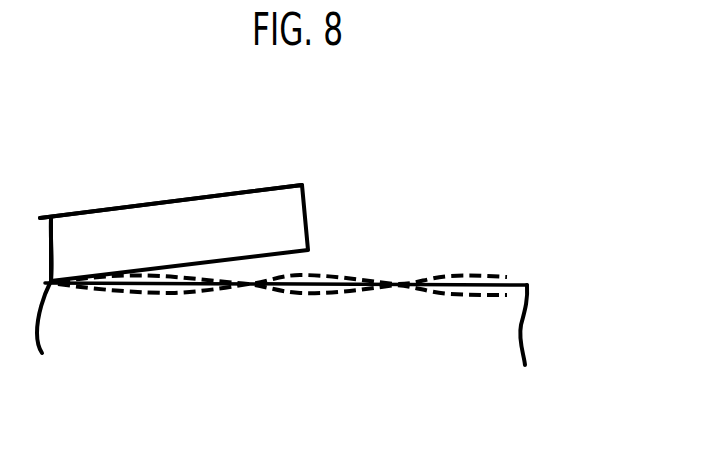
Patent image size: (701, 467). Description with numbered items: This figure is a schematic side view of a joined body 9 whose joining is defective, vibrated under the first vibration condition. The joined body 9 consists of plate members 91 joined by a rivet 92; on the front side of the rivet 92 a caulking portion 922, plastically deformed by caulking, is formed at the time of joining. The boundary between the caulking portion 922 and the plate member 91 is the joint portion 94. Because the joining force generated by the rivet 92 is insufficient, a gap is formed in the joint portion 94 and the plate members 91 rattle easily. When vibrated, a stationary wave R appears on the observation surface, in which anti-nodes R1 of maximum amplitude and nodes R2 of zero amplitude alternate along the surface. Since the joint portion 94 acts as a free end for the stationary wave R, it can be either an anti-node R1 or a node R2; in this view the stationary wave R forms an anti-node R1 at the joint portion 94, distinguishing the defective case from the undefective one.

The joined body 9 is at (463, 171).
The plate member 91 is at (510, 338).
The rivet 92 is at (200, 188).
The caulking portion 922 is at (120, 230).
The joint portion 94 is at (312, 283).
The stationary wave R is at (437, 265).
The anti-node R1 is at (338, 272).
The node R2 is at (85, 284).